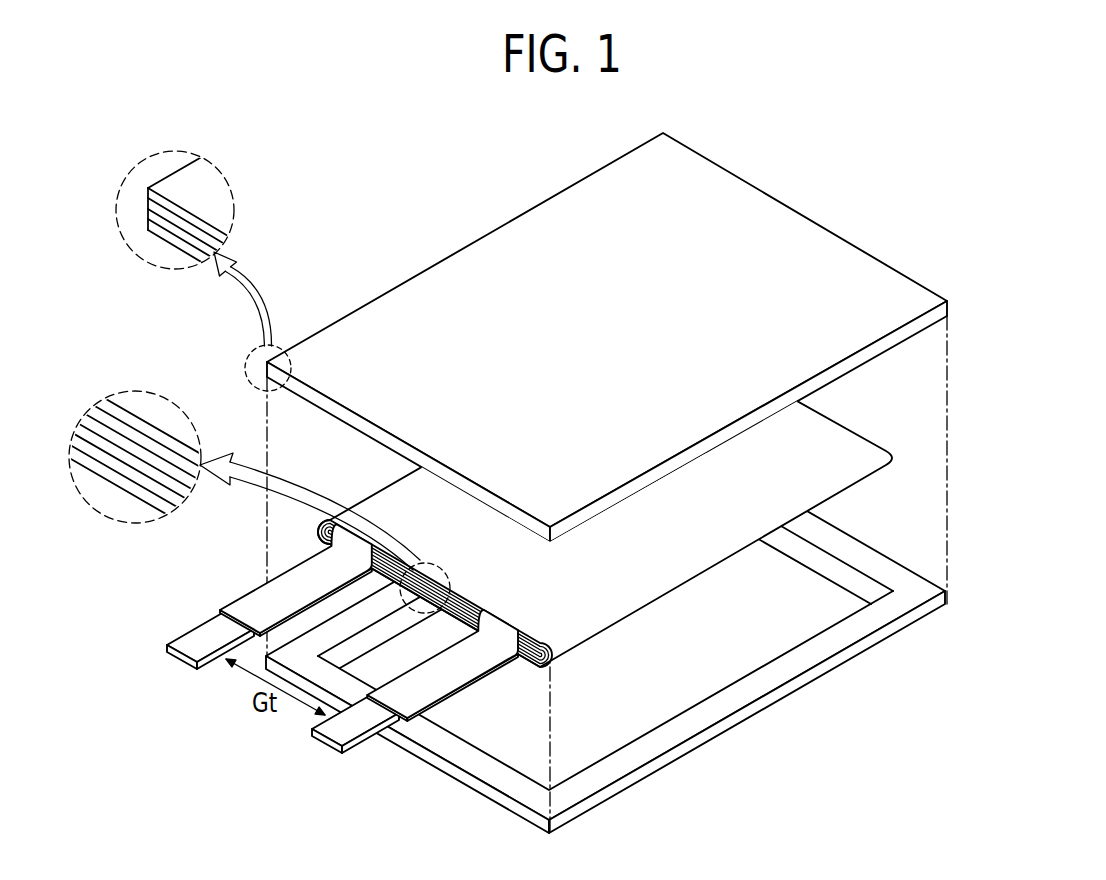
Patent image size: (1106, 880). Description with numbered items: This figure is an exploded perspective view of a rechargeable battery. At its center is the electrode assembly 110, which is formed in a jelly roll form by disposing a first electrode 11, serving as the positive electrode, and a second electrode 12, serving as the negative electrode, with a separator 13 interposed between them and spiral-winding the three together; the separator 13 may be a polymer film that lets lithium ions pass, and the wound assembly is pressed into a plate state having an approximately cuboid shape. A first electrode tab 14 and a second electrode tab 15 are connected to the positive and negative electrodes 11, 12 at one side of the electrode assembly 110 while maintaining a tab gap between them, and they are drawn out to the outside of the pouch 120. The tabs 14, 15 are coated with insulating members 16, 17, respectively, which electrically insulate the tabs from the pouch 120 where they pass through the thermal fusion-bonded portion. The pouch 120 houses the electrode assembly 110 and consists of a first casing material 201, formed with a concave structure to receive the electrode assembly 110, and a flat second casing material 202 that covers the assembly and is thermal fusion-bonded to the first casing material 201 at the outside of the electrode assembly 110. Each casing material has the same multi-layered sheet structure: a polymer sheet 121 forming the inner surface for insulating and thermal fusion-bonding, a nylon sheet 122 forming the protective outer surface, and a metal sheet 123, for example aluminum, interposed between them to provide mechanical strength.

The first electrode 11 is at (110, 455).
The second electrode 12 is at (137, 440).
The separator 13 is at (157, 468).
The first electrode tab 14 is at (210, 643).
The second electrode tab 15 is at (358, 727).
The insulating member 16 is at (292, 587).
The insulating member 17 is at (440, 685).
The electrode assembly 110 is at (709, 578).
The pouch 120 is at (679, 483).
The polymer sheet 121 is at (167, 233).
The nylon sheet 122 is at (150, 192).
The metal sheet 123 is at (147, 203).
The first casing material 201 is at (648, 630).
The second casing material 202 is at (903, 334).